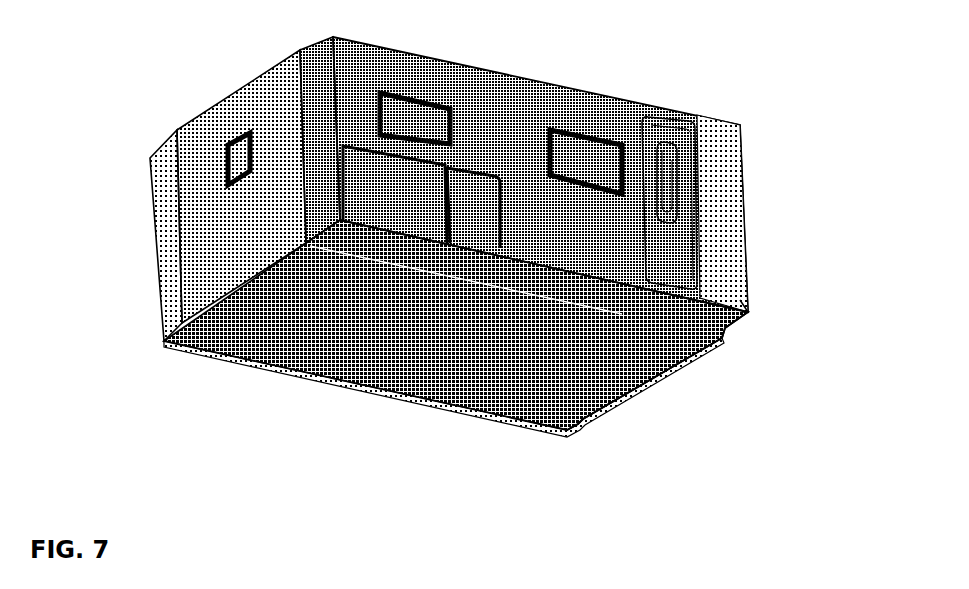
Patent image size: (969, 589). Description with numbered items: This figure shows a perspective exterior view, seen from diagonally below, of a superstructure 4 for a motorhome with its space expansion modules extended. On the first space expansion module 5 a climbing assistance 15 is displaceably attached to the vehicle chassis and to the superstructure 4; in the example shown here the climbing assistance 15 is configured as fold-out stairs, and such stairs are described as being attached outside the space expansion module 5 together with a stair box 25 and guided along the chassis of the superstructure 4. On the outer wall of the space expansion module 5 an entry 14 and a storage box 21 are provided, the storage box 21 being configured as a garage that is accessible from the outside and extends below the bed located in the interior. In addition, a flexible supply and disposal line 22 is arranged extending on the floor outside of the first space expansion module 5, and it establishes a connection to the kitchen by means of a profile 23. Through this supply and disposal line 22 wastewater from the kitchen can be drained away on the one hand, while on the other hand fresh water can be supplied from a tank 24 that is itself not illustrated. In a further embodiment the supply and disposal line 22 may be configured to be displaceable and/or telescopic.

The superstructure 4 is at (475, 173).
The first space expansion module 5 is at (553, 117).
The entry 14 is at (667, 124).
The climbing assistance 15 is at (717, 348).
The storage box 21 is at (483, 412).
The supply and disposal line 22 is at (582, 424).
The profile 23 is at (623, 403).
The tank 24 is at (723, 340).
The stair box 25 is at (746, 310).